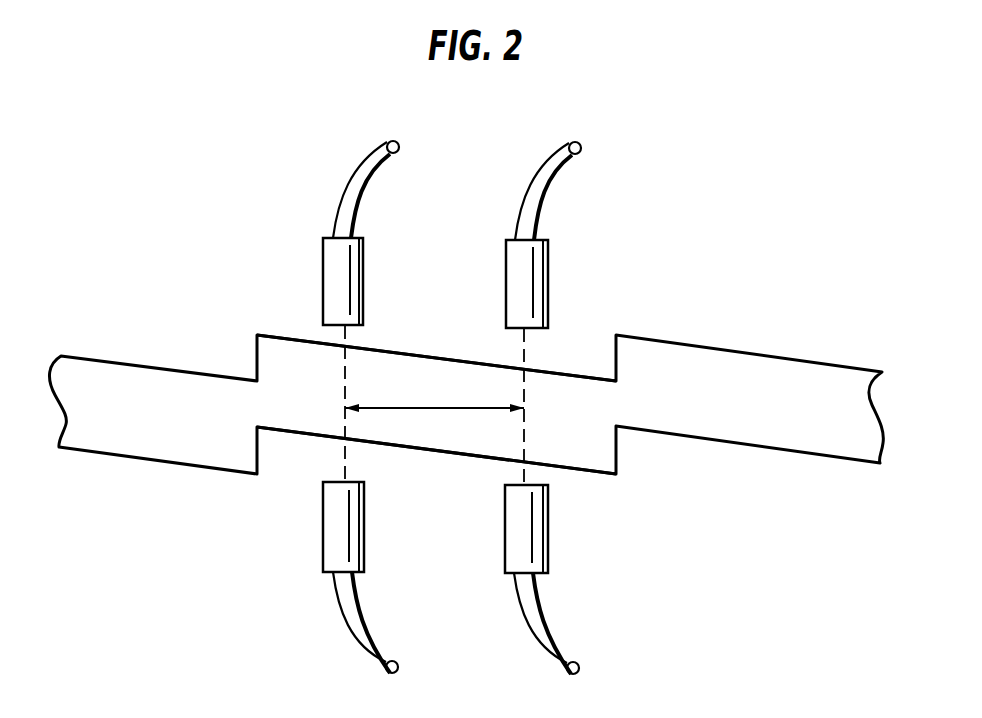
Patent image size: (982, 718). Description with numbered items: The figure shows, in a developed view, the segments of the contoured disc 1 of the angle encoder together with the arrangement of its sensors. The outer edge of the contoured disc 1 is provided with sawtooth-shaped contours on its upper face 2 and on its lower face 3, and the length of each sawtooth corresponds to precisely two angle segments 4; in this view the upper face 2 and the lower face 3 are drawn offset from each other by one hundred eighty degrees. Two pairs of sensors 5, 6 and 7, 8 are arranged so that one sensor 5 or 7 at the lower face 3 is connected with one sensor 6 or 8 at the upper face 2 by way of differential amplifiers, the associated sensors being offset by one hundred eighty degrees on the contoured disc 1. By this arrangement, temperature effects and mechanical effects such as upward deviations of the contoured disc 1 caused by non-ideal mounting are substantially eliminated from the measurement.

The contoured disc 1 is at (733, 407).
The upper face 2 is at (563, 373).
The lower face 3 is at (592, 475).
The angle segment 4 is at (433, 407).
The sensor 5 is at (537, 540).
The sensor 6 is at (538, 285).
The sensor 7 is at (355, 538).
The sensor 8 is at (355, 285).